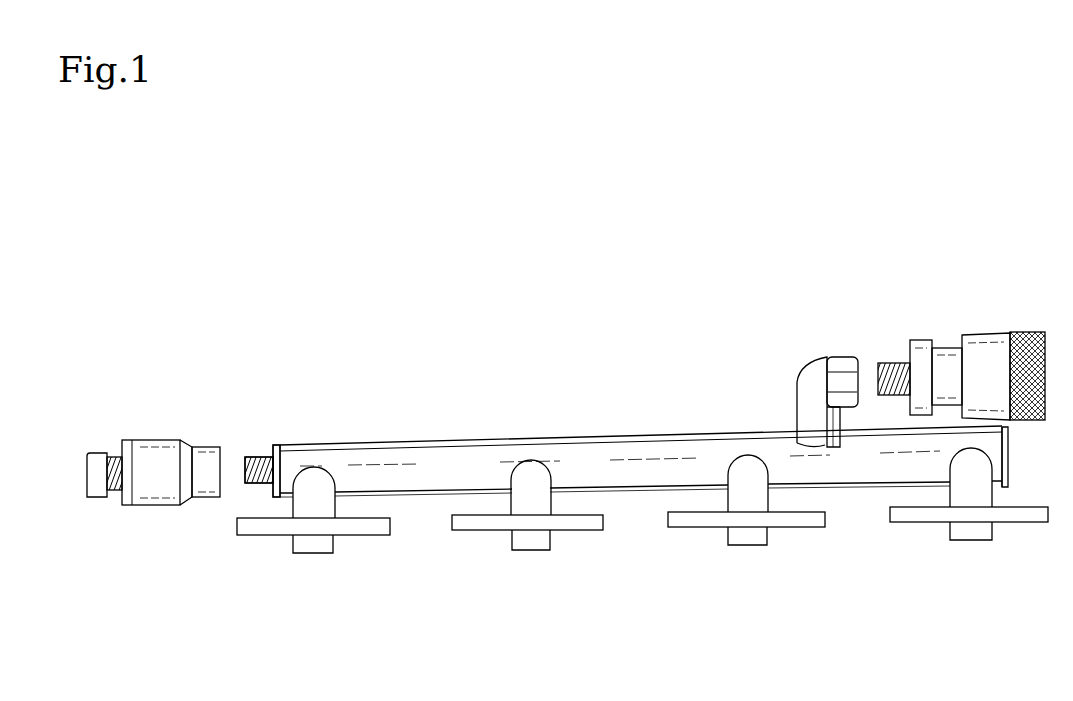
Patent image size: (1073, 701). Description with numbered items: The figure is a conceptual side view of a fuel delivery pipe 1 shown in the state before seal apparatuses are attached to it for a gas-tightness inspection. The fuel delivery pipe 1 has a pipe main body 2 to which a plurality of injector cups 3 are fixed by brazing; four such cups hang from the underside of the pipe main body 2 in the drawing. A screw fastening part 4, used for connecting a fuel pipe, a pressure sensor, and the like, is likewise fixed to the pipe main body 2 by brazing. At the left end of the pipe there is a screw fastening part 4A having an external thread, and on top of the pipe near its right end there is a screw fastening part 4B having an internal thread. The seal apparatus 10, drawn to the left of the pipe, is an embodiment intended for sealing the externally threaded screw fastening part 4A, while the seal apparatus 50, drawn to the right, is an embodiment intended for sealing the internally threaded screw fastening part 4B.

The fuel delivery pipe 1 is at (644, 399).
The pipe main body 2 is at (425, 440).
The injector cup 3 is at (323, 550).
The screw fastening part 4 is at (262, 471).
The screw fastening part of an external thread 4A is at (273, 450).
The screw fastening part of an internal thread 4B is at (842, 357).
The seal apparatus 10 is at (148, 437).
The seal apparatus 50 is at (975, 332).